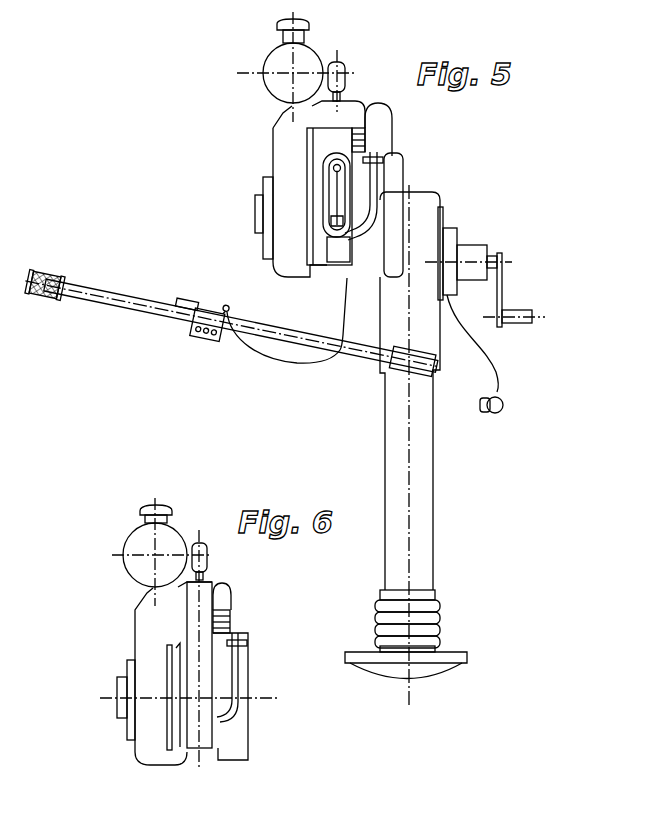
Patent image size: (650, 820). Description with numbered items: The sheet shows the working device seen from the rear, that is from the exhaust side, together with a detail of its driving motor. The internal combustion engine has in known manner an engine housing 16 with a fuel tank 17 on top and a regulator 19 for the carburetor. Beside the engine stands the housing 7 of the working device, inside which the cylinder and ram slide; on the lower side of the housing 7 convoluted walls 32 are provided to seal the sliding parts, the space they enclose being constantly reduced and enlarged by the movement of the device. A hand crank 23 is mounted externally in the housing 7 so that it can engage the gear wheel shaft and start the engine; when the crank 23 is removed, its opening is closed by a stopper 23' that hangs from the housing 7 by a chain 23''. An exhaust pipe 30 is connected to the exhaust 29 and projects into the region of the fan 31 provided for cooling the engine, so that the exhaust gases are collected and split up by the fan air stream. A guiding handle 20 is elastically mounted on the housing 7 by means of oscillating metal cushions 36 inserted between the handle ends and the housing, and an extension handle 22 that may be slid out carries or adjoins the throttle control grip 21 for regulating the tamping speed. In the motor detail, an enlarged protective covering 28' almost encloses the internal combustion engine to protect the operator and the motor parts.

In FIG. 5, the housing 7 is at (418, 502).
In FIG. 5, the engine housing 16 is at (290, 146).
In FIG. 6, the engine housing 16 is at (147, 617).
In FIG. 5, the fuel tank 17 is at (278, 85).
In FIG. 6, the fuel tank 17 is at (143, 556).
In FIG. 5, the regulator 19 is at (268, 356).
In FIG. 5, the guiding handle 20 is at (320, 340).
In FIG. 5, the throttle control grip 21 is at (220, 302).
In FIG. 5, the extension handle 22 is at (117, 305).
In FIG. 5, the hand crank 23 is at (500, 267).
In FIG. 5, the stopper 23' is at (513, 411).
In FIG. 5, the chain 23'' is at (497, 343).
In FIG. 6, the protective covering 28' is at (261, 674).
In FIG. 5, the exhaust 29 is at (340, 240).
In FIG. 5, the exhaust pipe 30 is at (375, 203).
In FIG. 6, the exhaust pipe 30 is at (237, 665).
In FIG. 5, the fan 31 is at (364, 141).
In FIG. 6, the fan 31 is at (230, 615).
In FIG. 5, the convoluted walls 32 is at (430, 624).
In FIG. 5, the oscillating metal cushions 36 is at (433, 378).